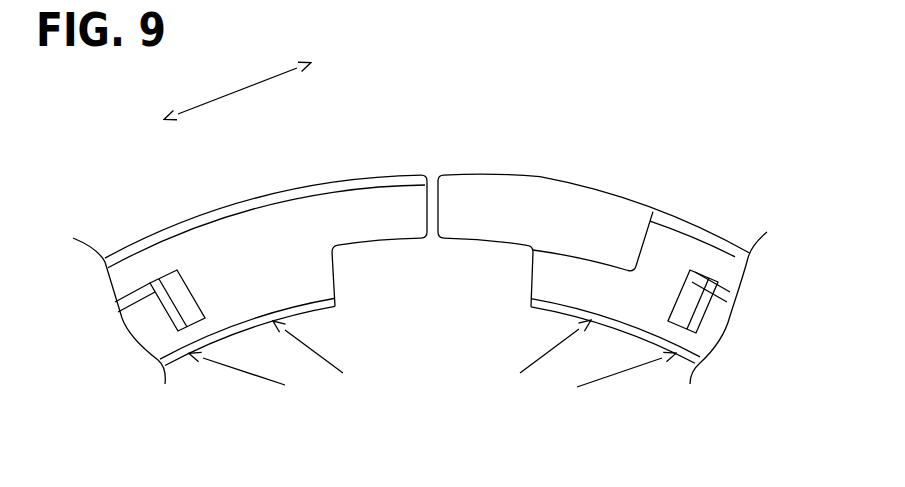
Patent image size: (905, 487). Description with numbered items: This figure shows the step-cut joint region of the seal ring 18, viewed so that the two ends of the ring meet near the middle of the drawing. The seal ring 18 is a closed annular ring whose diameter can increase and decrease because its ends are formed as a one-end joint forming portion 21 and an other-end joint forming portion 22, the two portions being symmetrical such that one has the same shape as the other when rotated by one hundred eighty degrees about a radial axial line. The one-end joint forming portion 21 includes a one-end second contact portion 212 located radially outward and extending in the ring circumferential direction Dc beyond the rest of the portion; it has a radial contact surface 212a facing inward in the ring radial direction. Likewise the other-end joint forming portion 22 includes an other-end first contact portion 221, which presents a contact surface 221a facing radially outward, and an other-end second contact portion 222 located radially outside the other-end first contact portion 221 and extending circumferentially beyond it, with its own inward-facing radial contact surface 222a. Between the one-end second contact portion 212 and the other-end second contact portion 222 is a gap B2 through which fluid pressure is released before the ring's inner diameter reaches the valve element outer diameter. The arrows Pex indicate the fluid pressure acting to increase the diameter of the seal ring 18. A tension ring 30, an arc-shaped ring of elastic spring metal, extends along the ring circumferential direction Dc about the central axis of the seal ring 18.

The seal ring 18 is at (608, 165).
The one-end joint forming portion 21 is at (250, 229).
The other-end joint forming portion 22 is at (602, 245).
The tension ring 30 is at (135, 323).
The one-end second contact portion 212 is at (379, 190).
The radial contact surface 212a is at (388, 243).
The other-end first contact portion 221 is at (616, 272).
The contact surface 221a is at (590, 257).
The other-end second contact portion 222 is at (488, 225).
The radial contact surface 222a is at (473, 243).
The gap B2 is at (432, 176).
The ring circumferential direction Dc is at (225, 90).
The fluid pressure Pex is at (243, 372).